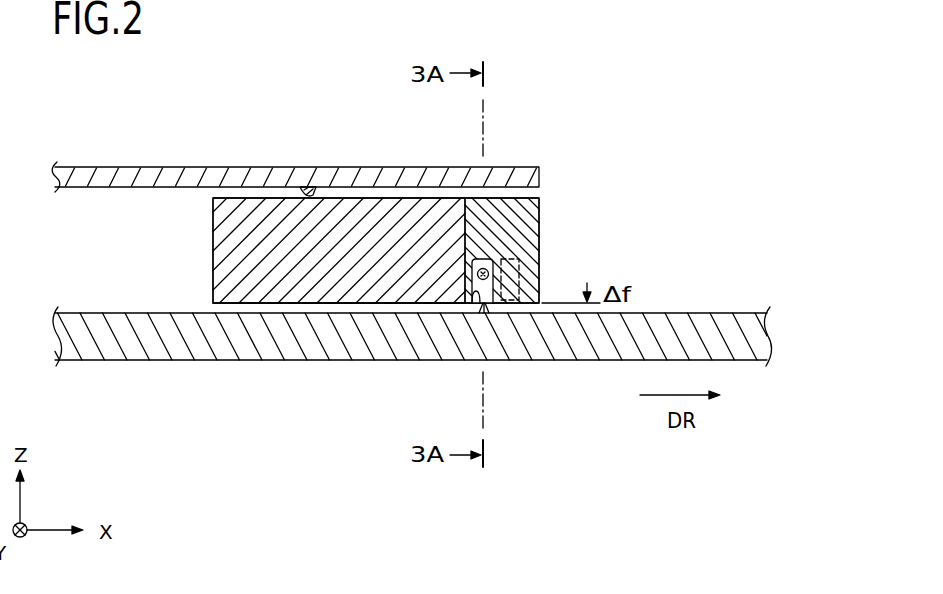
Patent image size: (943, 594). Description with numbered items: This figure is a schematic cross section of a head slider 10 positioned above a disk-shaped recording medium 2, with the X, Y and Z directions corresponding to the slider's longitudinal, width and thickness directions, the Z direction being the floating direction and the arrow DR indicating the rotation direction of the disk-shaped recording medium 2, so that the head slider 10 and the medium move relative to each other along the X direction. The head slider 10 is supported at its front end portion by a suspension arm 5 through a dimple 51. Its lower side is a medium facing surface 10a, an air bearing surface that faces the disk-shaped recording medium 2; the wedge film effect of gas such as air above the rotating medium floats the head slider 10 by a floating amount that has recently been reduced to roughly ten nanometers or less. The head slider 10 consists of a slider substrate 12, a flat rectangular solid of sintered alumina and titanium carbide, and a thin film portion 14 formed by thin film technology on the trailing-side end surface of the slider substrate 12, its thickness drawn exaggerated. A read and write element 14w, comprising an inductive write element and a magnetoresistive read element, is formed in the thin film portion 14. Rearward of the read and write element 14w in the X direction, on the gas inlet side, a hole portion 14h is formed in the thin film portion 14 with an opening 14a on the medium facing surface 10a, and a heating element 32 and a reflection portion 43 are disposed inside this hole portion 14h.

The disk-shaped recording medium 2 is at (130, 352).
The suspension arm 5 is at (140, 167).
The dimple 51 is at (329, 186).
The head slider 10 is at (621, 147).
The medium facing surface 10a is at (258, 303).
The slider substrate 12 is at (213, 252).
The thin film portion 14 is at (527, 211).
The opening 14a is at (488, 307).
The hole portion 14h is at (481, 305).
The read and write element 14w is at (520, 272).
The heating element 32 is at (483, 268).
The reflection portion 43 is at (476, 306).